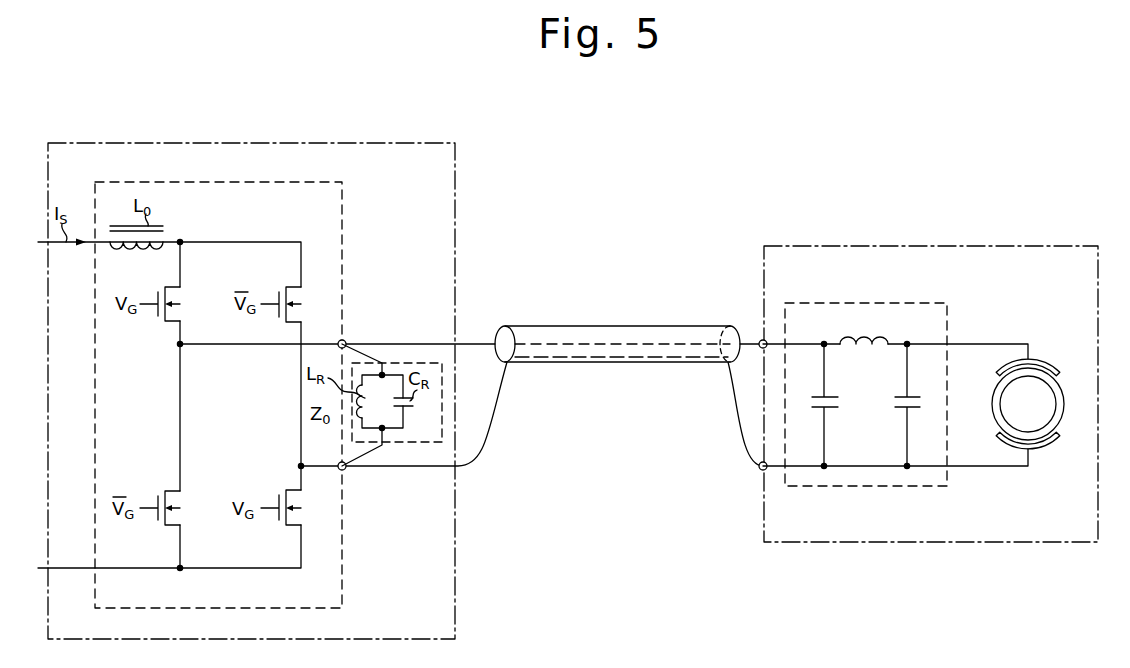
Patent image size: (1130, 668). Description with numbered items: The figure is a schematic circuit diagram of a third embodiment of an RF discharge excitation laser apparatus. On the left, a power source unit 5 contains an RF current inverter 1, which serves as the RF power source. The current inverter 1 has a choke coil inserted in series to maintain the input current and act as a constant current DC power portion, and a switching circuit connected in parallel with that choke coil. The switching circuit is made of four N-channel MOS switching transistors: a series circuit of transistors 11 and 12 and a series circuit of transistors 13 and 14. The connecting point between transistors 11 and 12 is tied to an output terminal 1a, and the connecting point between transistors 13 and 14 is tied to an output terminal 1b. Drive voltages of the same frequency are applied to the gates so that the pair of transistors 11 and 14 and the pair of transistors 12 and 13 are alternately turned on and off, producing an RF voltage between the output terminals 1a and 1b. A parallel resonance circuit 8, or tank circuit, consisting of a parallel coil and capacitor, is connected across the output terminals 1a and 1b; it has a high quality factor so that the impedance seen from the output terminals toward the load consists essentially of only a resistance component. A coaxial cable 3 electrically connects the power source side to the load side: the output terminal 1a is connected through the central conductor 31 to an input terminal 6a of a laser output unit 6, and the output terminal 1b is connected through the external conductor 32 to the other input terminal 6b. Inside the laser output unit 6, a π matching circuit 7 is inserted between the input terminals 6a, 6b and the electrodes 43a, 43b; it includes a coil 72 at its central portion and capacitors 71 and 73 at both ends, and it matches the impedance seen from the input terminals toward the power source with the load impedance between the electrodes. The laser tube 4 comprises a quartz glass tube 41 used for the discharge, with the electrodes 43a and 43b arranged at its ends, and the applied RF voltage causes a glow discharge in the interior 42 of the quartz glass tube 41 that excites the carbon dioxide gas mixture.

The RF current inverter 1 is at (342, 212).
The output terminal 1a is at (346, 340).
The output terminal 1b is at (346, 470).
The coaxial cable 3 is at (629, 375).
The central conductor 31 is at (602, 347).
The external conductor 32 is at (548, 326).
The laser tube 4 is at (1061, 406).
The quartz glass tube 41 is at (1064, 402).
The interior of the quartz glass tube 42 is at (1046, 414).
The electrode 43a is at (1045, 363).
The electrode 43b is at (1043, 445).
The power source unit 5 is at (455, 200).
The laser output unit 6 is at (922, 394).
The input terminal 6a is at (760, 341).
The input terminal 6b is at (760, 469).
The π matching circuit 7 is at (888, 386).
The capacitor 71 is at (838, 402).
The coil 72 is at (868, 339).
The capacitor 73 is at (890, 405).
The parallel resonance circuit 8 is at (397, 363).
The switching transistor 11 is at (172, 327).
The switching transistor 12 is at (173, 490).
The switching transistor 13 is at (292, 286).
The switching transistor 14 is at (288, 489).